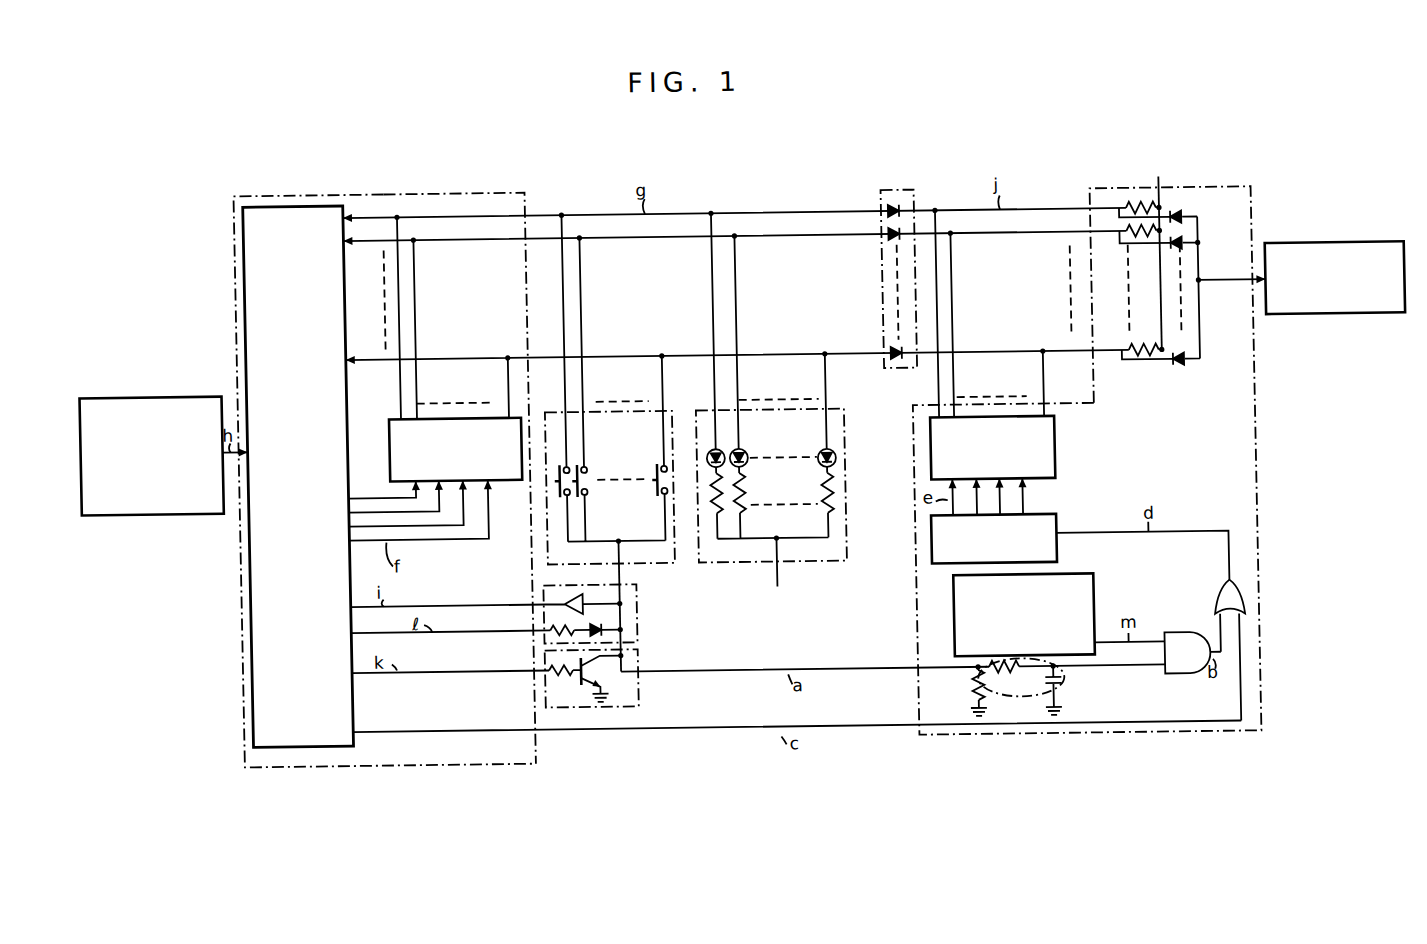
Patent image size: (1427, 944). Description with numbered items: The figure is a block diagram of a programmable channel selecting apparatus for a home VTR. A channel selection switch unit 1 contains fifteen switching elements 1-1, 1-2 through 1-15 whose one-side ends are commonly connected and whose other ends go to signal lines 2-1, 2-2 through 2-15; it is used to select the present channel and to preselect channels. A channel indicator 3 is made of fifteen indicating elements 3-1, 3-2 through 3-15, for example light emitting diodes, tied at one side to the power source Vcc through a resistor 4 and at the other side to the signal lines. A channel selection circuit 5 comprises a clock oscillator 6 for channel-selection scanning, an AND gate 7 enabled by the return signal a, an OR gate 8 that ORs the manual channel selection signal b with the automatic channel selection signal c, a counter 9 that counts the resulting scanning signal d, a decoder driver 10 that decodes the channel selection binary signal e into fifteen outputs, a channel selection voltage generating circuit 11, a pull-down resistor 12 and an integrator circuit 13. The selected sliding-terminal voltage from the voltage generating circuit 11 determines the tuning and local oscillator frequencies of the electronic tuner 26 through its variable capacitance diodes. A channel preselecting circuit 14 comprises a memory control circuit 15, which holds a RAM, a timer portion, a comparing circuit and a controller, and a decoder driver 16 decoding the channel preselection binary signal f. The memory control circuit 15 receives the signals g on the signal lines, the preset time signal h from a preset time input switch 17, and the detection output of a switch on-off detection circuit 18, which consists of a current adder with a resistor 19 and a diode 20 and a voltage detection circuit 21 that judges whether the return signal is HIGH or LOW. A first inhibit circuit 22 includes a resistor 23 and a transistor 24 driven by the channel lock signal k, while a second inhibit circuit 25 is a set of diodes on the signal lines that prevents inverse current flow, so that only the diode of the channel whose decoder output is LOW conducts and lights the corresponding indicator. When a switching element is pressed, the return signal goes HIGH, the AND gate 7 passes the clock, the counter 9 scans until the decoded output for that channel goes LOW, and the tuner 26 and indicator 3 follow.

The channel selection switch unit 1 is at (606, 424).
The switching element 1-1 is at (550, 490).
The switching element 1-2 is at (583, 497).
The switching element 1-15 is at (654, 474).
The signal line 2-1 is at (773, 212).
The signal line 2-2 is at (778, 229).
The signal line 2-15 is at (778, 360).
The channel indicator 3 is at (784, 440).
The channel indicator 3-1 is at (709, 455).
The channel indicator 3-2 is at (742, 470).
The channel indicator 3-15 is at (831, 468).
The resistor 4 is at (707, 503).
The channel selection circuit 5 is at (1254, 463).
The clock oscillator 6 is at (946, 612).
The AND gate 7 is at (1163, 642).
The OR gate 8 is at (1206, 610).
The counter 9 is at (1053, 531).
The decoder driver 10 is at (1053, 460).
The channel selection voltage generating circuit 11 is at (1213, 198).
The pull-down resistor 12 is at (961, 701).
The integrator circuit 13 is at (1055, 696).
The channel preselecting circuit 14 is at (384, 195).
The memory control circuit 15 is at (288, 206).
The decoder driver 16 is at (385, 452).
The preset time input switch 17 is at (152, 395).
The switch on-off detection circuit 18 is at (629, 597).
The resistor 19 is at (541, 631).
The diode 20 is at (629, 626).
The voltage detection circuit 21 is at (536, 600).
The first inhibit circuit 22 is at (629, 663).
The resistor 23 is at (537, 680).
The transistor 24 is at (582, 669).
The second inhibit circuit 25 is at (893, 197).
The electronic tuner 26 is at (1351, 255).